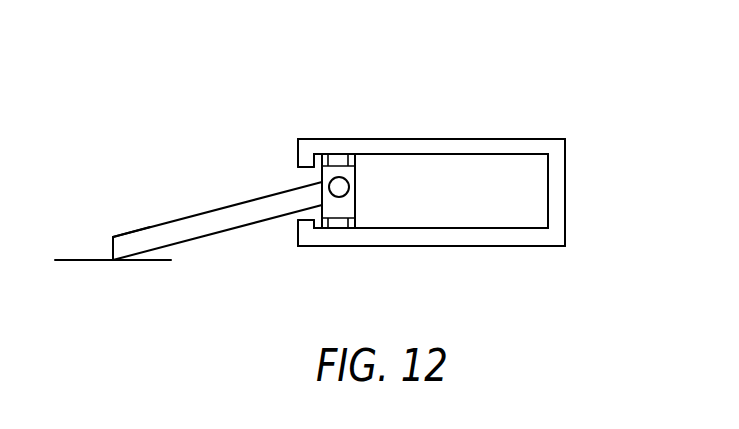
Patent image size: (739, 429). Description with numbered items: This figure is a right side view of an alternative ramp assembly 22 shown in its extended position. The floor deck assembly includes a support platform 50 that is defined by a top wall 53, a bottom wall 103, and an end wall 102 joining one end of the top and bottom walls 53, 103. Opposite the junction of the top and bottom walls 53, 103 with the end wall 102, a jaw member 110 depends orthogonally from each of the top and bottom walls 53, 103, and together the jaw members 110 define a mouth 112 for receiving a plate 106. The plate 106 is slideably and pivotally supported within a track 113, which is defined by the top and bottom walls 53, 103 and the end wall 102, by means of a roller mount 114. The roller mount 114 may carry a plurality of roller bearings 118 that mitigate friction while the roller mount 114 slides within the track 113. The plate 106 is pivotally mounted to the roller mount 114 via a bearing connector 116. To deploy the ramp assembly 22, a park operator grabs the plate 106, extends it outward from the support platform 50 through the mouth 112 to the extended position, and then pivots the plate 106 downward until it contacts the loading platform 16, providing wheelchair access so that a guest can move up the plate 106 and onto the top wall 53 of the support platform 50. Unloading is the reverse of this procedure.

The loading platform 16 is at (70, 265).
The ramp assembly 22 is at (252, 183).
The support platform 50 is at (527, 123).
The top wall 53 is at (445, 138).
The end wall 102 is at (567, 189).
The bottom wall 103 is at (423, 248).
The plate 106 is at (147, 227).
The jaw member 110 is at (297, 230).
The mouth 112 is at (305, 176).
The track 113 is at (531, 227).
The roller mount 114 is at (355, 210).
The bearing connector 116 is at (339, 187).
The roller bearings 118 is at (327, 158).